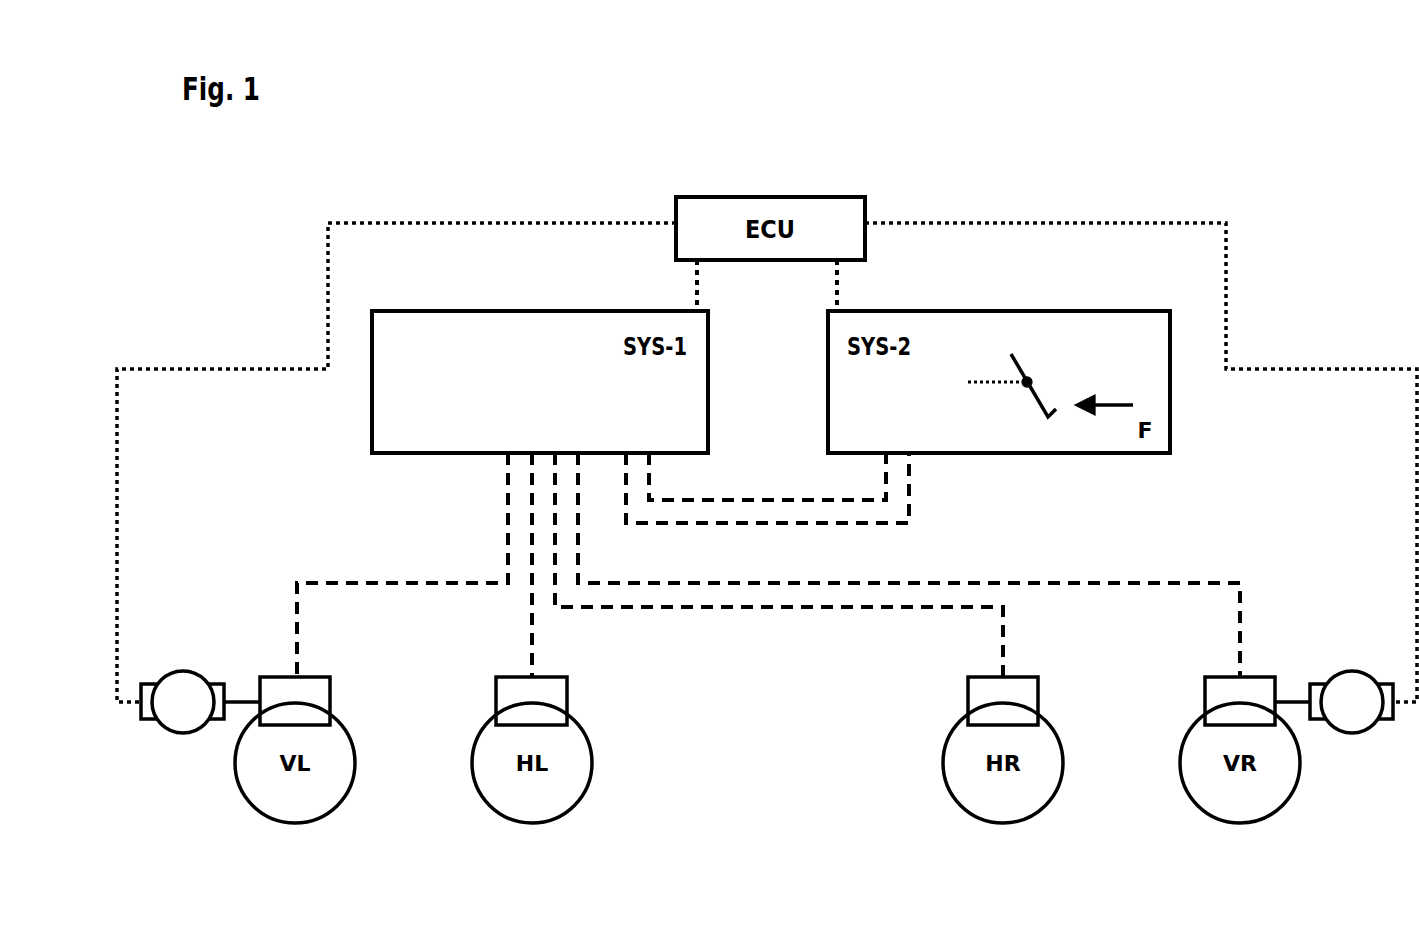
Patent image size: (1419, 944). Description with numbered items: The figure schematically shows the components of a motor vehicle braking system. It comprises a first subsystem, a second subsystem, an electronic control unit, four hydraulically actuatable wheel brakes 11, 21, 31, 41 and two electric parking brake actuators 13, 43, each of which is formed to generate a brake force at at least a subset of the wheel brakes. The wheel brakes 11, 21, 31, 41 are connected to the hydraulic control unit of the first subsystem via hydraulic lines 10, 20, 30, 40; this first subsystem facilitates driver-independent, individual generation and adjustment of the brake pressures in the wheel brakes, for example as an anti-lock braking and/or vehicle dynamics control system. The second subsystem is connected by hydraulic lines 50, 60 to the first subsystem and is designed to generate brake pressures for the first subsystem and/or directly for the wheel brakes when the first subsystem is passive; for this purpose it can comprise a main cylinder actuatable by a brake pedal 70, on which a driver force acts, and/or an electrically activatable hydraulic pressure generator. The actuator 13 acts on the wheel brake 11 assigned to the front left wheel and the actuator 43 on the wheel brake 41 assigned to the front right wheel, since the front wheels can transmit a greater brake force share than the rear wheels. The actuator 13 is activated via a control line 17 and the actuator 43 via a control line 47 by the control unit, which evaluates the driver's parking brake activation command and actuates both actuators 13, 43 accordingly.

The hydraulic line 10 is at (327, 583).
The wheel brake 11 is at (258, 677).
The EPB actuator 13 is at (153, 677).
The control line 17 is at (177, 369).
The hydraulic line 20 is at (528, 640).
The wheel brake 21 is at (497, 677).
The hydraulic line 30 is at (1007, 640).
The wheel brake 31 is at (1037, 677).
The hydraulic line 40 is at (1213, 583).
The wheel brake 41 is at (1275, 677).
The EPB actuator 43 is at (1382, 678).
The control line 47 is at (1358, 369).
The hydraulic line 50 is at (752, 500).
The hydraulic line 60 is at (909, 500).
The brake pedal 70 is at (1036, 393).